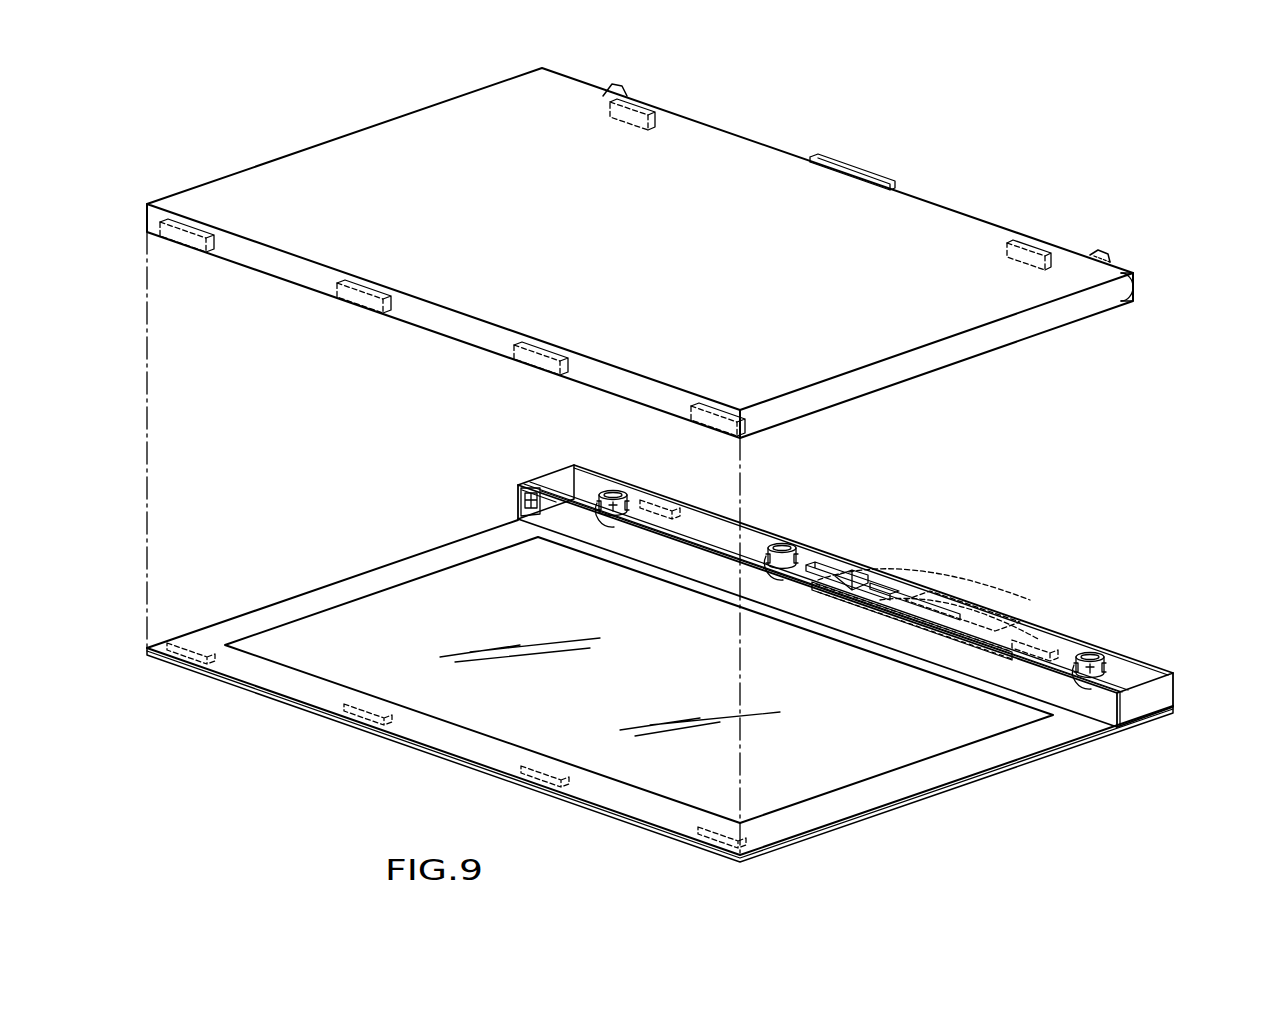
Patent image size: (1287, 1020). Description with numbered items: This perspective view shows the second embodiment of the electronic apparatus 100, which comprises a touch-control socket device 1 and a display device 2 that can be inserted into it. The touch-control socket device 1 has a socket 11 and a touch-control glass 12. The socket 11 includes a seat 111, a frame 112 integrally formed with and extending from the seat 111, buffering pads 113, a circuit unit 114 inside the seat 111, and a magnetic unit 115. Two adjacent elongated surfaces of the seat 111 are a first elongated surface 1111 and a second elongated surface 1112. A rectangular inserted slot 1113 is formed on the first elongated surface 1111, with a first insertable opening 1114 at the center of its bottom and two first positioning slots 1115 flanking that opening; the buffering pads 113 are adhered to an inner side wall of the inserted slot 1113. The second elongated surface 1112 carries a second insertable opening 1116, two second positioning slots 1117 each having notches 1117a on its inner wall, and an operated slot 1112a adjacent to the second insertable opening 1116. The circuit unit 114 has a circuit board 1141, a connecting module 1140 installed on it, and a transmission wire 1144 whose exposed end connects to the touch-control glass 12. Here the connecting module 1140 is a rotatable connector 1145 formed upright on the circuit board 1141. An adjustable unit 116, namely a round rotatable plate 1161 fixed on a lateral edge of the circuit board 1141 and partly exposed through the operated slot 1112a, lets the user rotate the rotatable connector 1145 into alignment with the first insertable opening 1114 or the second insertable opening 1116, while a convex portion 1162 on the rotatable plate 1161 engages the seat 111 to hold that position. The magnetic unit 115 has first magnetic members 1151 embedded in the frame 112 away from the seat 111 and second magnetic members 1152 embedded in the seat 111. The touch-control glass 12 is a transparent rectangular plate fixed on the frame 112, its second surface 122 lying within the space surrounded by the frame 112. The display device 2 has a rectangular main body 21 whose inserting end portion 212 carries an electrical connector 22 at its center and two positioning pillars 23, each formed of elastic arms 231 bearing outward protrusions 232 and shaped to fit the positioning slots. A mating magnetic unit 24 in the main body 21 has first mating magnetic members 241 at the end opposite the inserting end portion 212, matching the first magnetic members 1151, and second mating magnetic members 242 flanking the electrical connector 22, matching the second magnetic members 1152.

The electronic apparatus 100 is at (1196, 85).
The touch-control socket device 1 is at (694, 634).
The display device 2 is at (305, 148).
The socket 11 is at (671, 663).
The seat 111 is at (855, 625).
The frame 112 is at (1023, 743).
The buffering pads 113 is at (518, 497).
The first elongated surface 1111 is at (522, 505).
The second elongated surface 1112 is at (578, 478).
The operated slot 1112a is at (740, 543).
The inserted slot 1113 is at (553, 506).
The first insertable opening 1114 is at (812, 600).
The first positioning slots 1115 is at (604, 522).
The second insertable opening 1116 is at (865, 598).
The second positioning slots 1117 is at (1115, 648).
The notches 1117a is at (1106, 668).
The circuit unit 114 is at (918, 591).
The connecting module 1140 is at (1068, 562).
The circuit board 1141 is at (1100, 608).
The transmission wire 1144 is at (1000, 635).
The rotatable connector 1145 is at (900, 585).
The magnetic unit 115 is at (517, 640).
The first magnetic members 1151 is at (190, 660).
The second magnetic members 1152 is at (665, 508).
The adjustable unit 116 is at (874, 526).
The rotatable plate 1161 is at (850, 560).
The convex portion 1162 is at (790, 556).
The touch-control glass 12 is at (626, 662).
The second surface 122 is at (318, 645).
The main body 21 is at (704, 84).
The inserting end portion 212 is at (806, 78).
The electrical connector 22 is at (857, 170).
The positioning pillars 23 is at (1186, 240).
The elastic arms 231 is at (1100, 251).
The protrusions 232 is at (1160, 268).
The mating magnetic unit 24 is at (625, 281).
The first mating magnetic members 241 is at (365, 302).
The second mating magnetic members 242 is at (1090, 180).